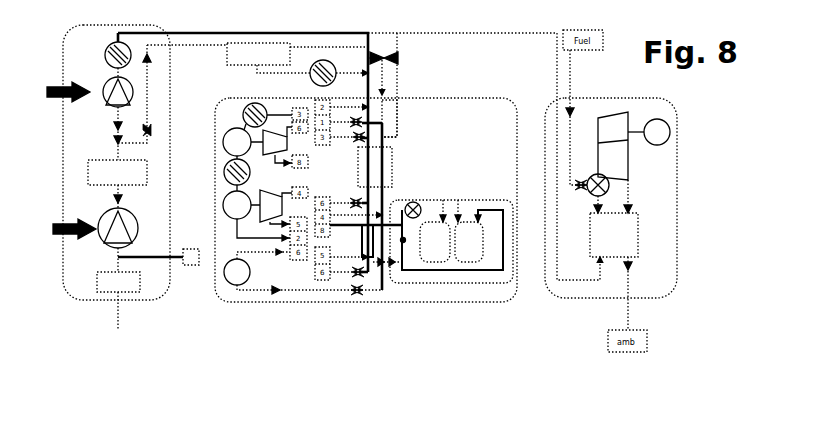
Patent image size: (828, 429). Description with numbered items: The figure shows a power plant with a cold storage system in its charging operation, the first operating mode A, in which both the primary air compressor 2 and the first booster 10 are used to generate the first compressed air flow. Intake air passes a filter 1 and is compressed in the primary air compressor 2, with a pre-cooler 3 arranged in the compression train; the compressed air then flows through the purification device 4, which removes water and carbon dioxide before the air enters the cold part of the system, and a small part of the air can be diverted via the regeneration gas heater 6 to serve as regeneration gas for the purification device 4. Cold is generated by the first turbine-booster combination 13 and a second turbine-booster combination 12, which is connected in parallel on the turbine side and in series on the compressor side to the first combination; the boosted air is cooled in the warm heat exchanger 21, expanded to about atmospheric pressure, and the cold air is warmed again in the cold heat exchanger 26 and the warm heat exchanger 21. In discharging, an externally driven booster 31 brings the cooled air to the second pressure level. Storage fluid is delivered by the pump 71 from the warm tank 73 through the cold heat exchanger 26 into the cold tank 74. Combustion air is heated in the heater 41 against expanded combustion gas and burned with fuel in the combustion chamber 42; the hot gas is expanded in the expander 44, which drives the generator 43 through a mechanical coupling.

The first operating mode A is at (91, 162).
The filter 1 is at (128, 282).
The primary air compressor 2 is at (127, 228).
The pre-cooler 3 is at (124, 172).
The purification device 4 is at (258, 63).
The regeneration gas heater 6 is at (315, 77).
The booster 10 is at (109, 56).
The second turbine-booster combination 12 is at (254, 134).
The first turbine-booster combination 13 is at (254, 198).
The warm heat exchanger 21 is at (384, 167).
The cold heat exchanger 26 is at (370, 245).
The externally driven booster 31 is at (257, 267).
The heater 41 is at (614, 235).
The combustion chamber 42 is at (602, 178).
The generator 43 is at (649, 141).
The expander 44 is at (613, 146).
The pump 71 is at (413, 201).
The warm tank 73 is at (435, 242).
The cold tank 74 is at (469, 242).